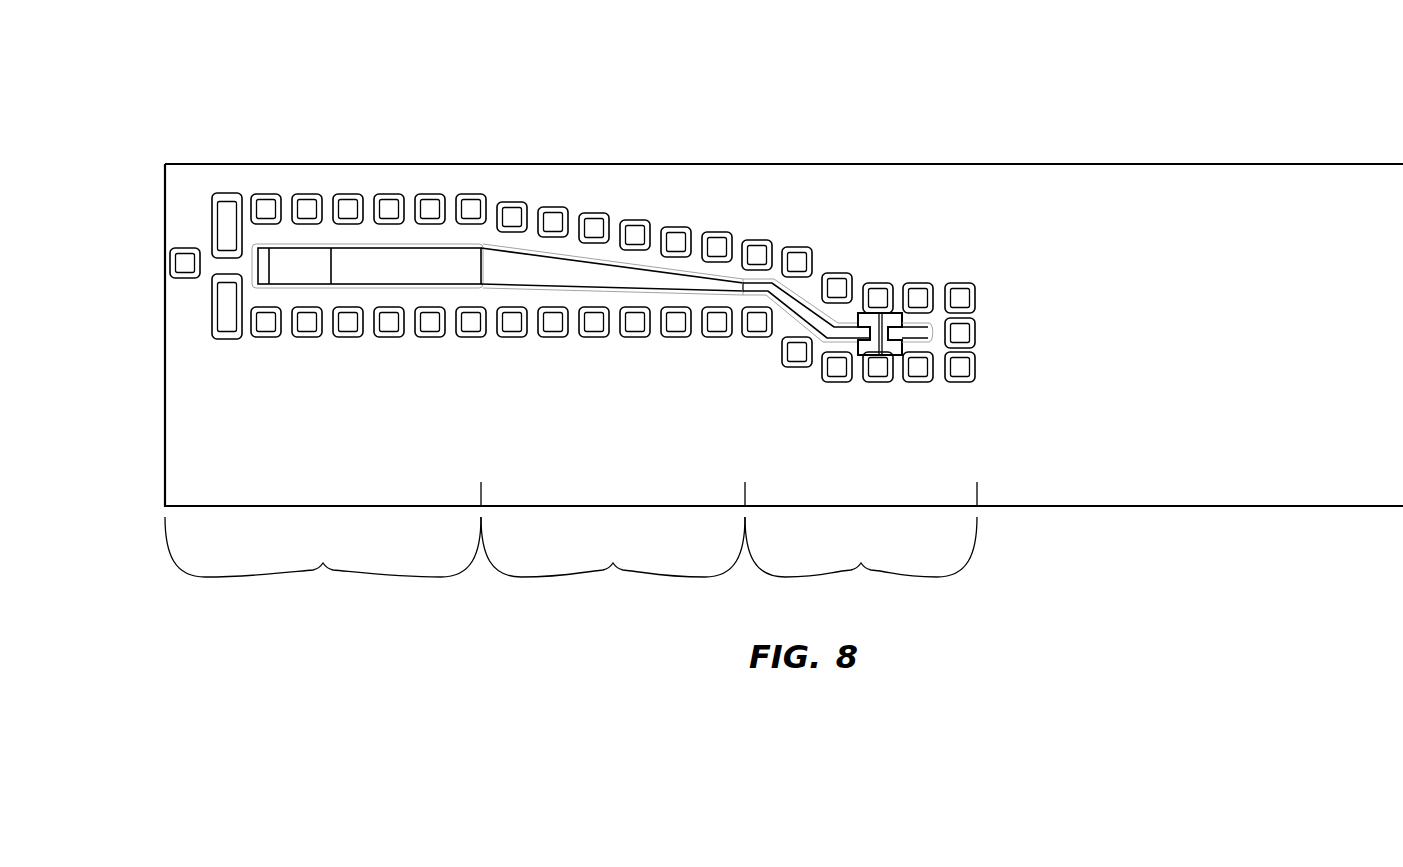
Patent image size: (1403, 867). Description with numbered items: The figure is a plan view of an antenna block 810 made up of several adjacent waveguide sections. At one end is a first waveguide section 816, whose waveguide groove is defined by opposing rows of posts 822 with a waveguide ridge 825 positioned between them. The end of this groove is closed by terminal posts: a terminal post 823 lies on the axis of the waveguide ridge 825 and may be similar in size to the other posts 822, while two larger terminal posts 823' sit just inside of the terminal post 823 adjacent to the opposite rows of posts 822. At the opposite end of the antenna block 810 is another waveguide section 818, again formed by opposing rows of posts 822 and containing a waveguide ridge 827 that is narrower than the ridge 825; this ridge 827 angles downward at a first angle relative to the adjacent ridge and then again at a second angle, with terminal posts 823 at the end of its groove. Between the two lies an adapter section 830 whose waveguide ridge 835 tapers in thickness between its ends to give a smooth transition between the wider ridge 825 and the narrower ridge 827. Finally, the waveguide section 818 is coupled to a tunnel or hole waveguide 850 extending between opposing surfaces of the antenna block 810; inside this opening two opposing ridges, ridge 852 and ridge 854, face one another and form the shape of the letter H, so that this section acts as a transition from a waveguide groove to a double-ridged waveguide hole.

The antenna block 810 is at (1025, 142).
The first waveguide section 816 is at (323, 541).
The adapter section 830 is at (613, 541).
The waveguide section 818 is at (861, 541).
The posts 822 is at (348, 203).
The terminal post 823 is at (583, 293).
The larger terminal posts 823' is at (172, 254).
The waveguide ridge 825 is at (400, 262).
The waveguide ridge of adapter section 835 is at (600, 278).
The waveguide ridge 827 is at (798, 308).
The tunnel or hole waveguide 850 is at (897, 312).
The ridge 852 is at (895, 338).
The ridge 854 is at (867, 335).